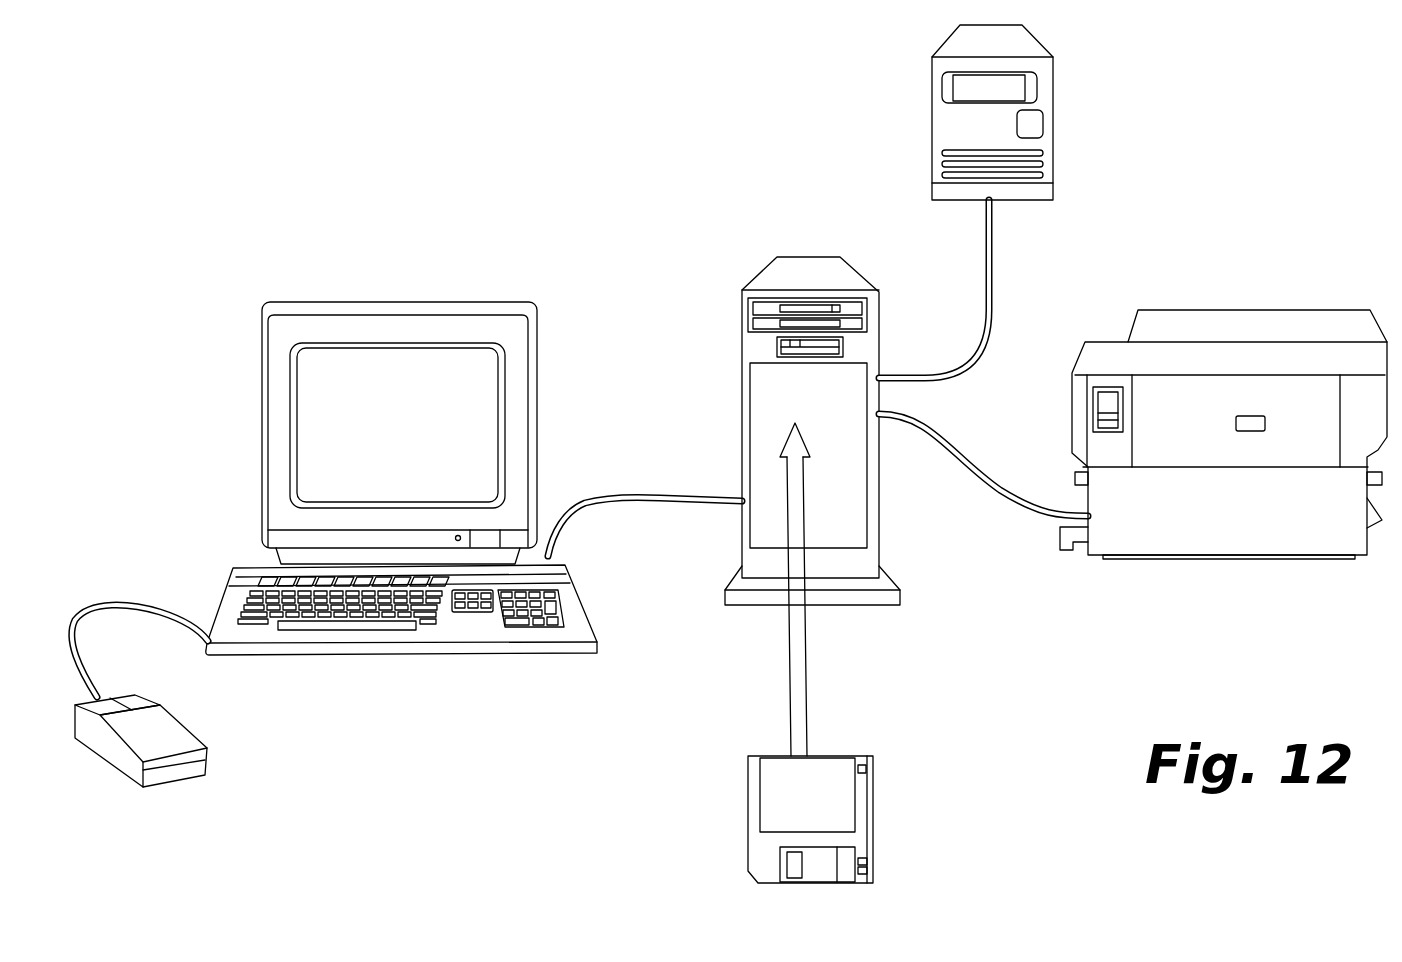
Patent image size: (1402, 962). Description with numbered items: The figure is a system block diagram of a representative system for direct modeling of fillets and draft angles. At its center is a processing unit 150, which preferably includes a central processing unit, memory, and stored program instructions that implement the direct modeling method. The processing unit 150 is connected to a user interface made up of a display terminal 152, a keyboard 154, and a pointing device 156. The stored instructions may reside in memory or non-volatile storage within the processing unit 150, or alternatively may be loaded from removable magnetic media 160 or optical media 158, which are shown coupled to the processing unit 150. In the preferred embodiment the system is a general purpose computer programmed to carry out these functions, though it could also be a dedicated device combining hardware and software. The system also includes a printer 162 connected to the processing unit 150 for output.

The processing unit 150 is at (742, 310).
The display terminal 152 is at (294, 311).
The keyboard 154 is at (453, 654).
The pointing device 156 is at (207, 760).
The optical media 158 is at (1053, 85).
The removable magnetic media 160 is at (752, 793).
The printer 162 is at (1307, 308).